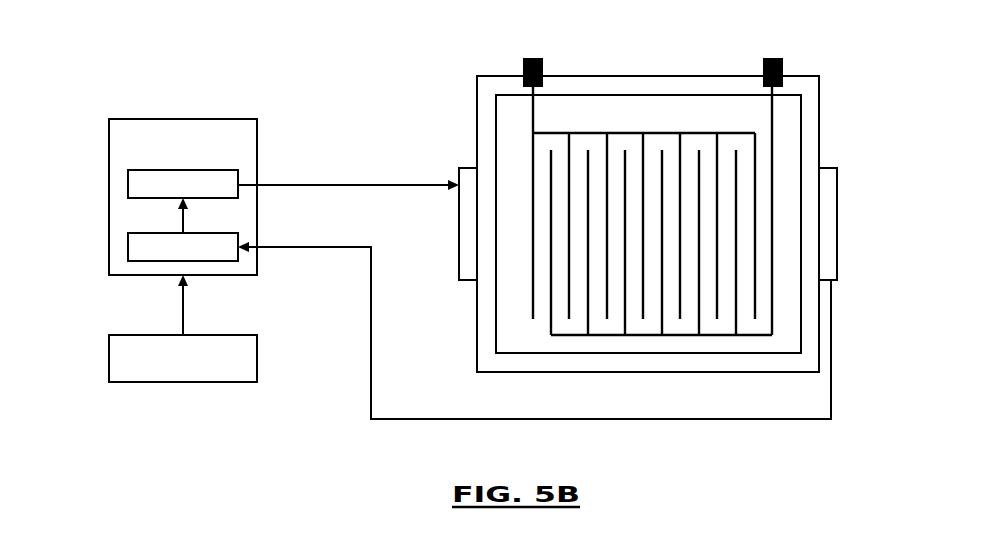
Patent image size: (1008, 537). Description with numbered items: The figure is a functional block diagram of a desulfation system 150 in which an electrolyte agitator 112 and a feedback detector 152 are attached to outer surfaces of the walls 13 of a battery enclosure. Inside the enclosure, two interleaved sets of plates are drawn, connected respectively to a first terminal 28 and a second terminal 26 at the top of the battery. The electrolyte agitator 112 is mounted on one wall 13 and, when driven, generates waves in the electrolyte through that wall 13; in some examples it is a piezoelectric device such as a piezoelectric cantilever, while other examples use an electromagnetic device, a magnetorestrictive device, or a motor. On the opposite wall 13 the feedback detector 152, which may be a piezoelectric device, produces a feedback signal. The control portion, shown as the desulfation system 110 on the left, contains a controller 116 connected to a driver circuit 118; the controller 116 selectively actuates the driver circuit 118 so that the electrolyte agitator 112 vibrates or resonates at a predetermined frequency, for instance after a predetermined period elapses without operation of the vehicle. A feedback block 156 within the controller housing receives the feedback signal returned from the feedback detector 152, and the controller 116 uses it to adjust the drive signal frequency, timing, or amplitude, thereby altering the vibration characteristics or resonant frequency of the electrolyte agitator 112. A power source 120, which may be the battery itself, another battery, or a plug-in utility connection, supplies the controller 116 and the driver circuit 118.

The desulfation system 150 is at (366, 60).
The desulfation system 110 is at (246, 104).
The controller 116 is at (146, 119).
The driver circuit 118 is at (128, 184).
The signal processing unit 156 is at (128, 244).
The power source 120 is at (183, 382).
The walls 13 is at (477, 131).
The electrolyte agitator 112 is at (459, 280).
The feedback detector 152 is at (837, 173).
The first terminal 28 is at (534, 56).
The second terminal 26 is at (774, 56).